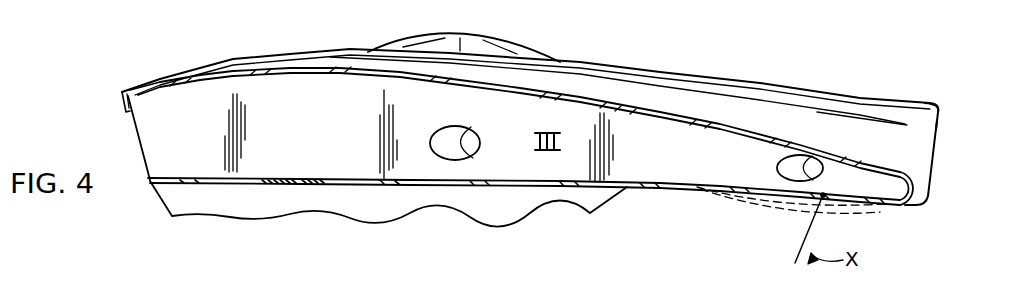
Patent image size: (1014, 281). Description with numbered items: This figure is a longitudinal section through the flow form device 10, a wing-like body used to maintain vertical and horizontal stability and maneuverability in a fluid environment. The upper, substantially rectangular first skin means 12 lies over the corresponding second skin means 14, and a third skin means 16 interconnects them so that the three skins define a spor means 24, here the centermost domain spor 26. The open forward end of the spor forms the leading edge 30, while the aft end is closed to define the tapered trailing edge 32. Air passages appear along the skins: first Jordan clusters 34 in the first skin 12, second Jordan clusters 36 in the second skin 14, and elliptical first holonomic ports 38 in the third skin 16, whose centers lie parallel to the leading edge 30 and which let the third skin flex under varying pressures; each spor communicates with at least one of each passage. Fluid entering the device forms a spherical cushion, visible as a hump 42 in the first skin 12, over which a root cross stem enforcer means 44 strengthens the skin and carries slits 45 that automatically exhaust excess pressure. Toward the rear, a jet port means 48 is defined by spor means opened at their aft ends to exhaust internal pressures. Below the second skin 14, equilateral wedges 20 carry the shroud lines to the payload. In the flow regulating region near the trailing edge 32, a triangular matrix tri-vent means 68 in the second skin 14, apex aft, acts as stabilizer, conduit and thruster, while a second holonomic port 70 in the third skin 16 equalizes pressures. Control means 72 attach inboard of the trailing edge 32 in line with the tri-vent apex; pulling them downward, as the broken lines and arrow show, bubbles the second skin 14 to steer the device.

The flow form device 10 is at (675, 205).
The first skin means 12 is at (232, 71).
The second skin means 14 is at (213, 185).
The third skin means 16 is at (345, 121).
The equilateral wedges 20 is at (462, 216).
The spor means 24 is at (186, 142).
The domain spor 26 is at (692, 75).
The leading edge 30 is at (121, 104).
The trailing edge 32 is at (929, 203).
The first Jordan clusters 34 is at (638, 113).
The second Jordan clusters 36 is at (296, 185).
The first holonomic ports 38 is at (470, 134).
The hump 42 is at (410, 34).
The root cross stem enforcer means 44 is at (440, 45).
The slits 45 is at (502, 44).
The jet port means 48 is at (941, 108).
The matrix tri-vent means 68 is at (778, 168).
The second holonomic ports 70 is at (808, 158).
The control means 72 is at (808, 233).